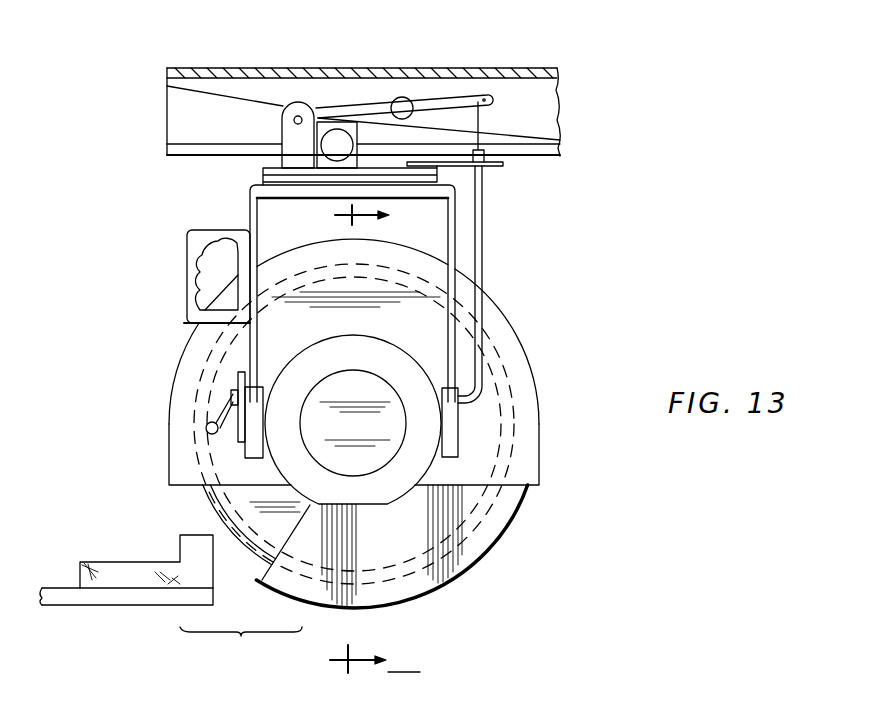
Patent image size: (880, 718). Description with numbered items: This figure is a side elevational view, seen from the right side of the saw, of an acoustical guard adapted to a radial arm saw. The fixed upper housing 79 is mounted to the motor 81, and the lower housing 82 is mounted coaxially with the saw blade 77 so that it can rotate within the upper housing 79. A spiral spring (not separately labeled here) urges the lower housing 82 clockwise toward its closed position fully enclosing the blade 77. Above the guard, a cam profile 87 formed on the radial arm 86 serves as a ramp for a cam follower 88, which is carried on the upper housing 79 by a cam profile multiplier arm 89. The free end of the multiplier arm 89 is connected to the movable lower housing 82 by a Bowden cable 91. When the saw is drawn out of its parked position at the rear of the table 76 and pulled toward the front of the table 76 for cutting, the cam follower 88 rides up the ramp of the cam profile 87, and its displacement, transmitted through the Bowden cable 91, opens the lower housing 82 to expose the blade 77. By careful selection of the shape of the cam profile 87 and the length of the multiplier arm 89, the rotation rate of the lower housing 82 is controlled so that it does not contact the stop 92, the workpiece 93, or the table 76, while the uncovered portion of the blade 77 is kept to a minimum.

The table 76 is at (73, 597).
The saw blade 77 is at (410, 568).
The upper housing 79 is at (523, 344).
The motor 81 is at (387, 388).
The lower housing 82 is at (497, 538).
The radial arm 86 is at (232, 88).
The cam profile 87 is at (268, 105).
The cam follower 88 is at (398, 97).
The cam profile multiplier arm 89 is at (462, 100).
The Bowden cable 91 is at (482, 251).
The stop 92 is at (190, 548).
The workpiece 93 is at (108, 567).